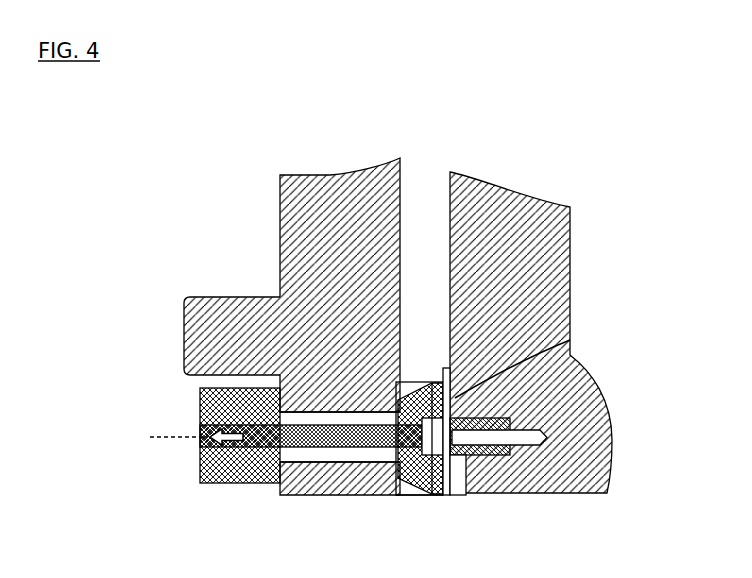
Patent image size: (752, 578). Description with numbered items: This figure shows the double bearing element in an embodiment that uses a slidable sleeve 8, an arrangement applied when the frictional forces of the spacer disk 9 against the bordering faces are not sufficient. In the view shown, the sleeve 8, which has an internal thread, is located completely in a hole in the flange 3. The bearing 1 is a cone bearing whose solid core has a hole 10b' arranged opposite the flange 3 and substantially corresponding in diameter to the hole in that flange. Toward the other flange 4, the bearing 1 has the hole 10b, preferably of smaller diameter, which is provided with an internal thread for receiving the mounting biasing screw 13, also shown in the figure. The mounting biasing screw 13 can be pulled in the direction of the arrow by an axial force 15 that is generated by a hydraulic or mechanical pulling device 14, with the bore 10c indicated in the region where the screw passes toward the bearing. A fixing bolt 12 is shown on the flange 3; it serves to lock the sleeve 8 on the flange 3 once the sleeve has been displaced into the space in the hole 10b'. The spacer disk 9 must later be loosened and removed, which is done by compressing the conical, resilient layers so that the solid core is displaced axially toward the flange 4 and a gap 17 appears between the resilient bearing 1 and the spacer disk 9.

The flange 4 is at (300, 247).
The flange 3 is at (540, 272).
The spacer disk 9 is at (570, 340).
The hole 10b is at (418, 425).
The hole 10b' is at (443, 408).
The bolt hole 10c is at (320, 455).
The mounting biasing screw 13 is at (343, 447).
The pulling device 14 is at (222, 470).
The axial force 15 is at (214, 440).
The gap 17 is at (445, 496).
The slidable sleeve 8 is at (510, 455).
The fixing bolt 12 is at (467, 495).
The bearing 1 is at (405, 492).